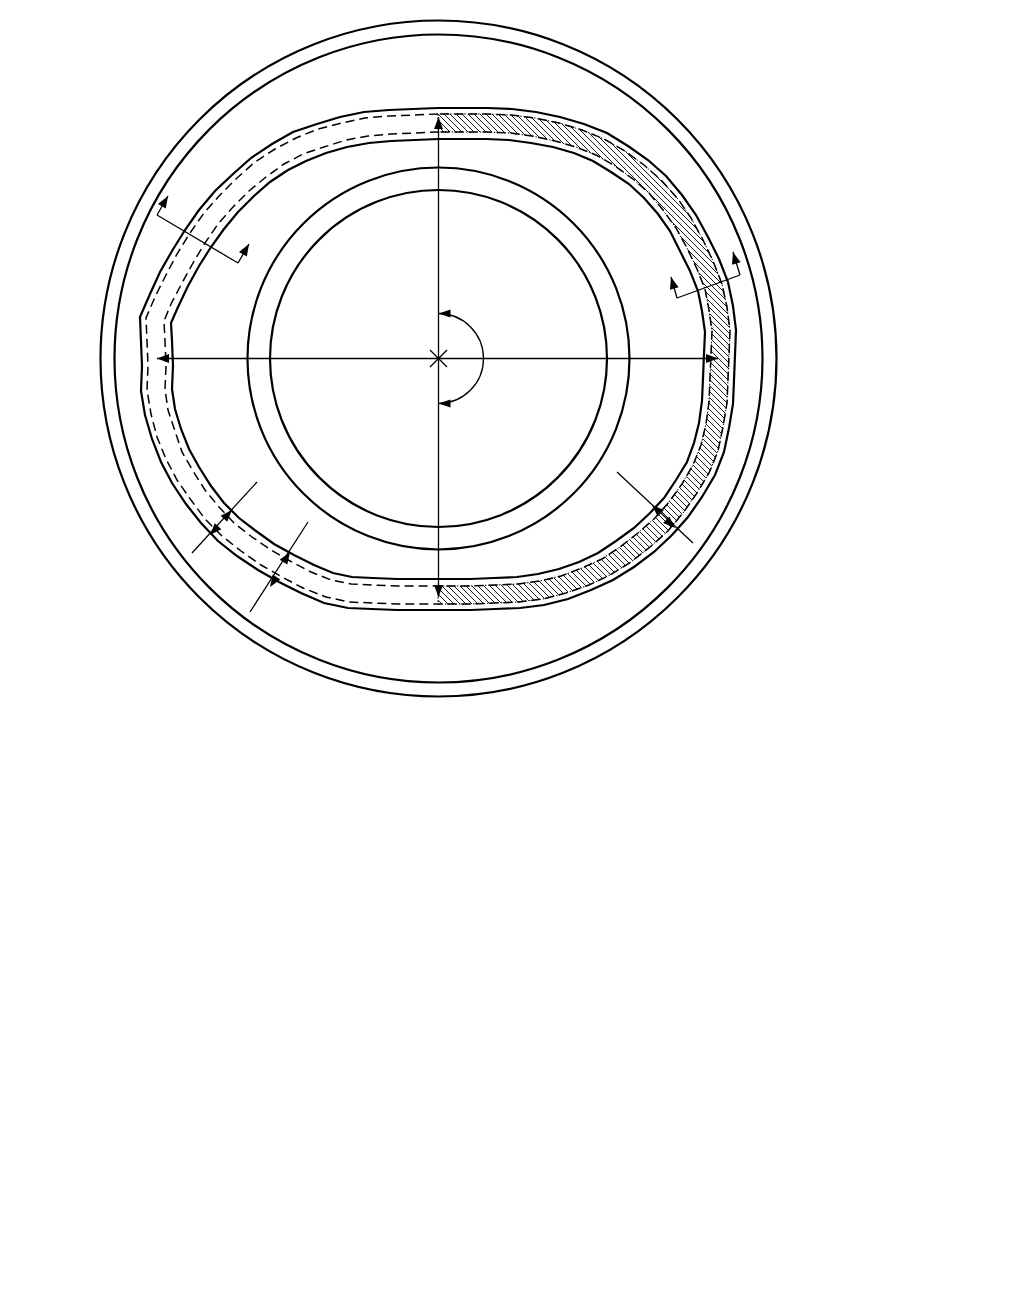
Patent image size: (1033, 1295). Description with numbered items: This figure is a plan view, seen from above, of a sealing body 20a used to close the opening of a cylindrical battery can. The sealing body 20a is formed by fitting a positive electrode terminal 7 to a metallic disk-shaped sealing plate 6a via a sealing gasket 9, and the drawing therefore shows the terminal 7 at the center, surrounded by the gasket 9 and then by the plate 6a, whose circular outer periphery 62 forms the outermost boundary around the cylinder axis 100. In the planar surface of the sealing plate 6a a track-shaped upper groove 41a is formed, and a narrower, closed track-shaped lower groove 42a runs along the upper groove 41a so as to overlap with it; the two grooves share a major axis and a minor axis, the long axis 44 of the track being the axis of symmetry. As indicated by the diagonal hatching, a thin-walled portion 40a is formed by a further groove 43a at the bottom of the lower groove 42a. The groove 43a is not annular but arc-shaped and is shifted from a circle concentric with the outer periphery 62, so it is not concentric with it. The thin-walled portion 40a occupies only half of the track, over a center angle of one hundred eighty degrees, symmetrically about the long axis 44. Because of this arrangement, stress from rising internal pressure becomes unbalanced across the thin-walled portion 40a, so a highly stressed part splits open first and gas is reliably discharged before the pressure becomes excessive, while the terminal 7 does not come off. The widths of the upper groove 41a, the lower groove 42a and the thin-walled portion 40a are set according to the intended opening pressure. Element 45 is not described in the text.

The sealing body 20a is at (714, 96).
The outer periphery 62 is at (761, 239).
The sealing plate 6a is at (725, 485).
The sealing gasket 9 is at (617, 418).
The positive electrode terminal 7 is at (510, 483).
The upper groove 41a is at (393, 612).
The lower groove 42a is at (173, 481).
The thin-walled portion 40a is at (483, 613).
The groove 43a is at (584, 359).
The long axis 44 is at (547, 358).
The vertical center axis 45 is at (439, 437).
The cylinder axis 100 is at (438, 359).